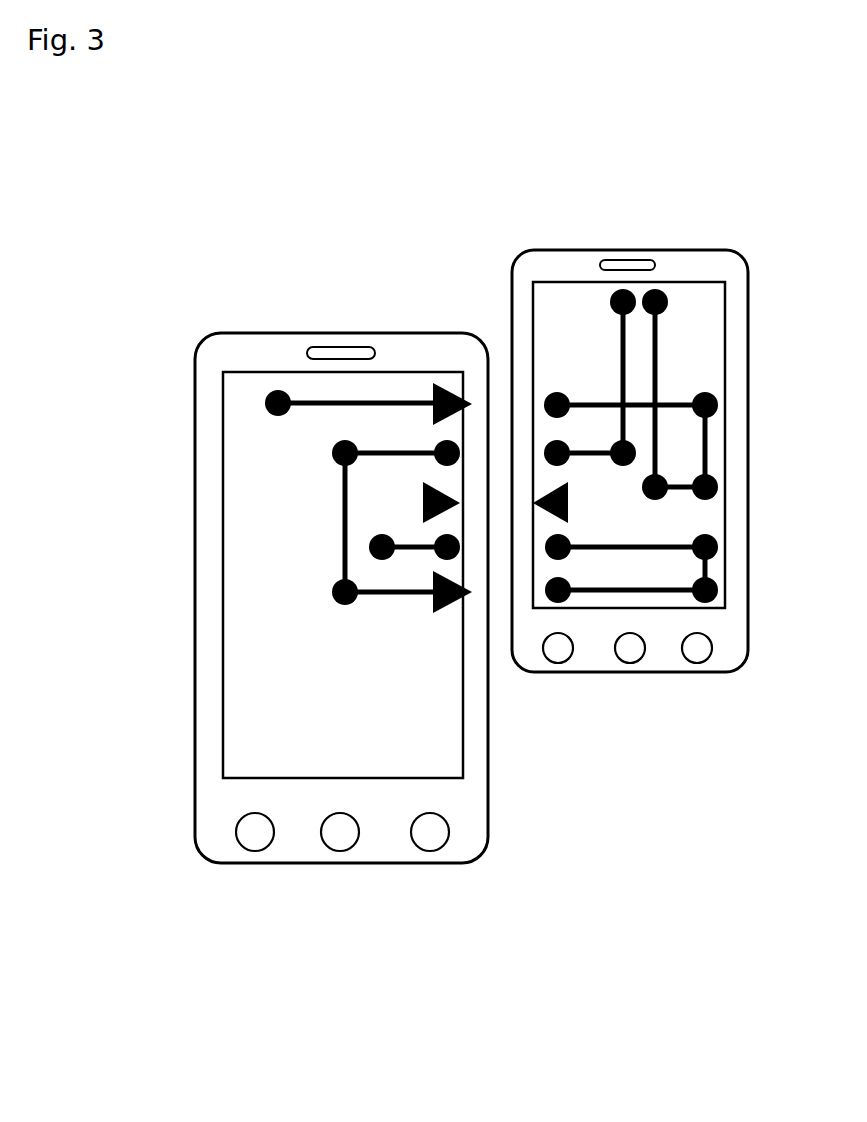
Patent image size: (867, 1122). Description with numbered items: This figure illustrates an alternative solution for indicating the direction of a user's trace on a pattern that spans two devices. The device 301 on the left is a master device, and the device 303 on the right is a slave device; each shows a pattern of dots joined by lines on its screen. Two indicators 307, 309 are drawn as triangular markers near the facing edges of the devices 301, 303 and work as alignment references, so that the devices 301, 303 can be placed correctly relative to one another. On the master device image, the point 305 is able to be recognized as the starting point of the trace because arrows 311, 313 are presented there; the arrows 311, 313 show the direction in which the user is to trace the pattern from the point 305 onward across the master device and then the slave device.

The device 301 is at (390, 863).
The device 303 is at (672, 672).
The point 305 is at (281, 392).
The indicator 307 is at (450, 512).
The indicator 309 is at (543, 507).
The arrow 311 is at (446, 388).
The arrow 313 is at (445, 607).